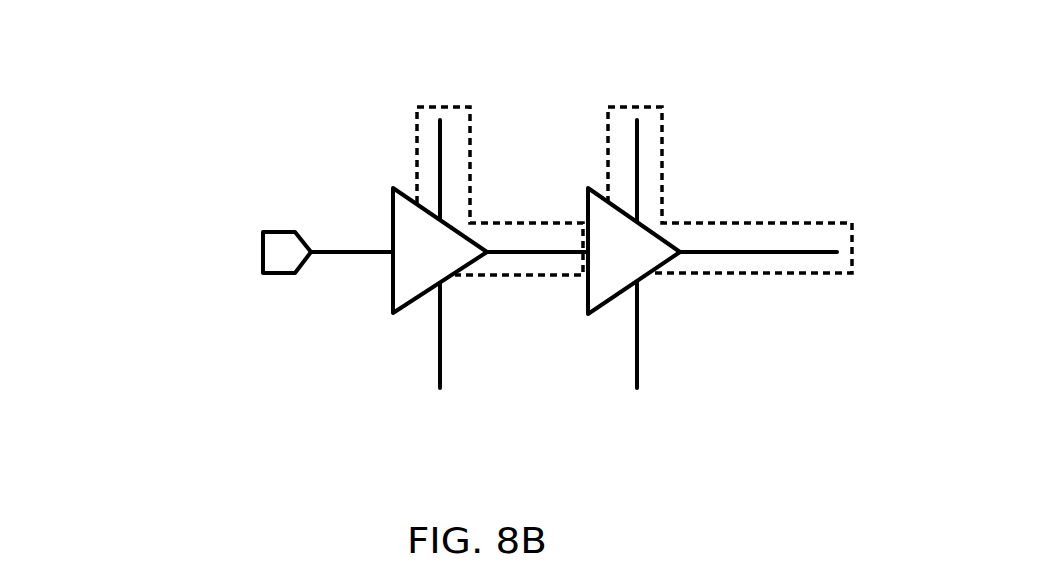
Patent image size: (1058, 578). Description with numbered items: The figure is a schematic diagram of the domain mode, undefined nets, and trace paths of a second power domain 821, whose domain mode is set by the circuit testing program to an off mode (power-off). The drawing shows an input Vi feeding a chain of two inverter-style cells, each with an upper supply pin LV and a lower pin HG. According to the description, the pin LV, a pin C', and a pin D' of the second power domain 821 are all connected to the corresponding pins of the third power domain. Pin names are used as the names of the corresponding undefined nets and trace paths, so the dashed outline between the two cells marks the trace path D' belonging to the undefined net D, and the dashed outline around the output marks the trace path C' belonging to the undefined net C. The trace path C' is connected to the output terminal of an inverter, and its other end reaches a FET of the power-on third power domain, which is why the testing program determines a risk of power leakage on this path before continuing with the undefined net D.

The second power domain 821 is at (470, 252).
The input port Vi is at (310, 252).
The pin LV is at (549, 163).
The high-voltage ground terminal HG is at (542, 339).
The undefined net D is at (522, 269).
The undefined net C is at (748, 268).